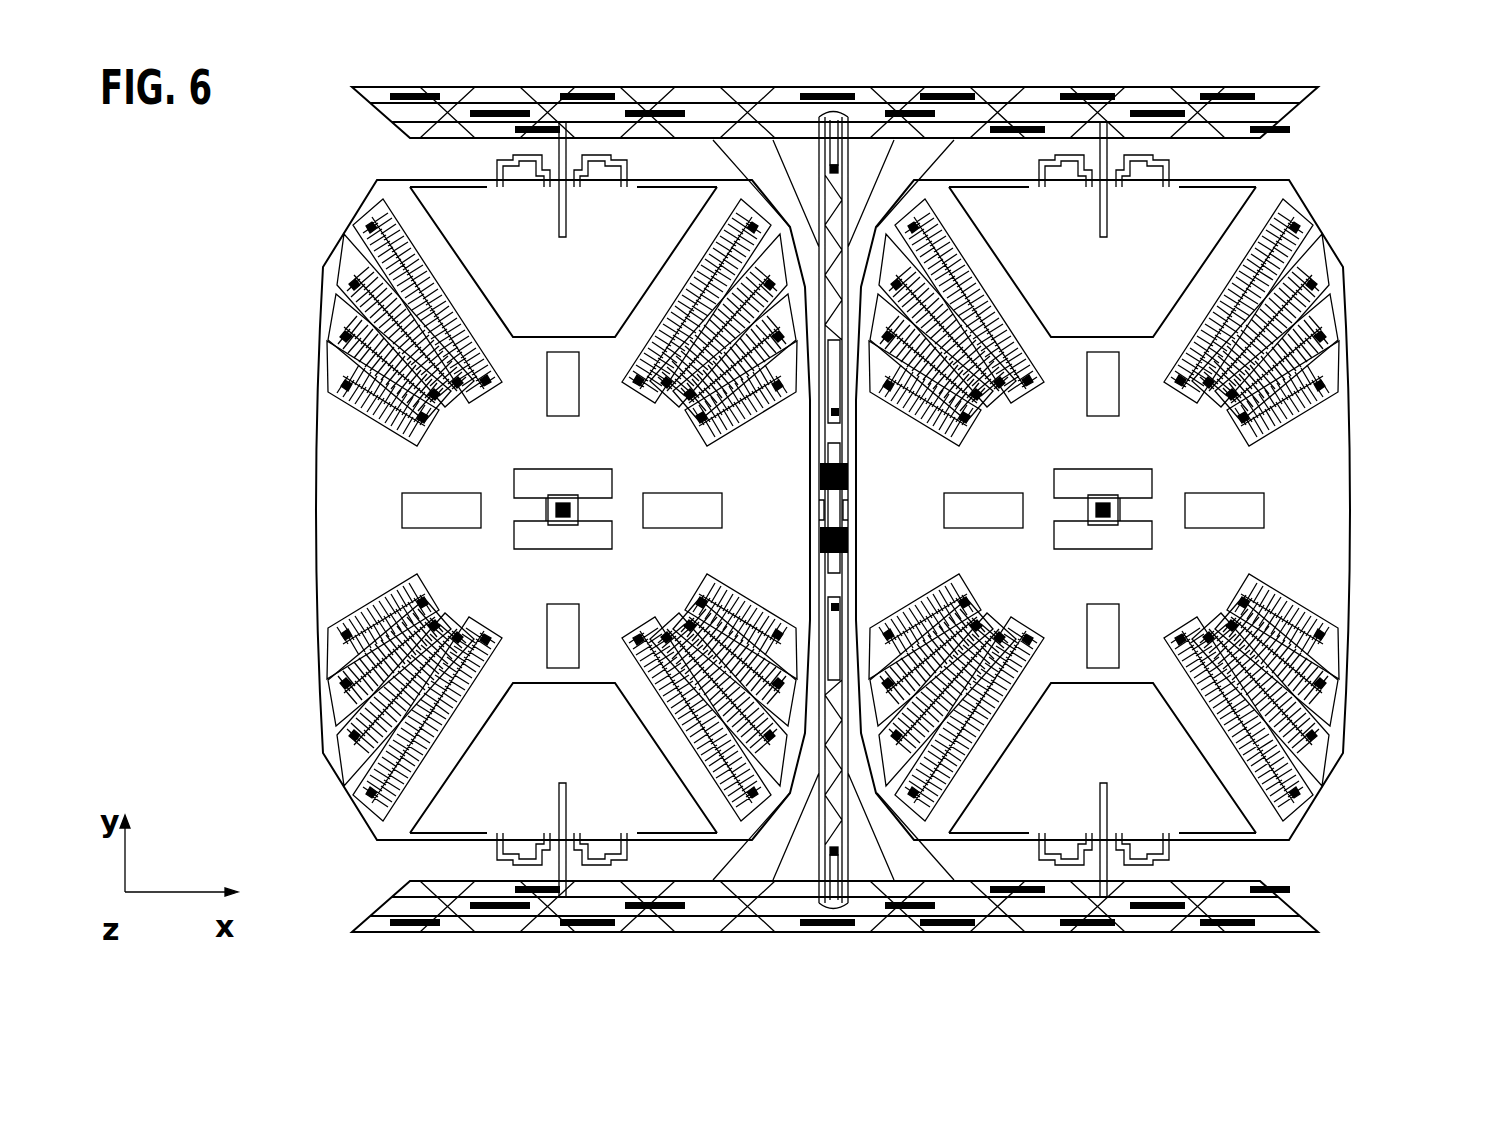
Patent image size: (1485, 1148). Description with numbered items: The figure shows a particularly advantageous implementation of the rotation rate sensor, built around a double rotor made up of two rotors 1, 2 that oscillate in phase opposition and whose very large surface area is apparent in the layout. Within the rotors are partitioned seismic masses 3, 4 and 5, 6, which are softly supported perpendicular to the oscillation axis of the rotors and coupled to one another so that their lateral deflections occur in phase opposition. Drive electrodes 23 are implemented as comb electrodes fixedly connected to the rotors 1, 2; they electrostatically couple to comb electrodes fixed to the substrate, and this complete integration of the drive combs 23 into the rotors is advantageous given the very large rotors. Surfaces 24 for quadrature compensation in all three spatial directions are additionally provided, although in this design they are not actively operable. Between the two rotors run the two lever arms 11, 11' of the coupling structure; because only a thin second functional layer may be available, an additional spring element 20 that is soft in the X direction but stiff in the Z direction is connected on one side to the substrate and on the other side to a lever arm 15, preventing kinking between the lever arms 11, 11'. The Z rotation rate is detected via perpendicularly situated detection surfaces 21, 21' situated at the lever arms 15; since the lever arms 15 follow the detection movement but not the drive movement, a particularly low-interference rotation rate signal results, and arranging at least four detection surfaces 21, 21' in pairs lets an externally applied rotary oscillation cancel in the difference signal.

The rotor 1 is at (307, 649).
The rotor 2 is at (1360, 617).
The seismic mass 3 is at (460, 232).
The seismic mass 4 is at (457, 788).
The seismic mass 5 is at (1207, 232).
The seismic mass 6 is at (1207, 790).
The arm 11 is at (895, 311).
The arm 11' is at (886, 709).
The lever arm 15 is at (1297, 120).
The spring element 20 is at (838, 400).
The detection surface 21 is at (473, 509).
The detection surface 21' is at (1100, 509).
The drive electrode 23 is at (340, 360).
The surface for quadrature compensation 24 is at (403, 516).